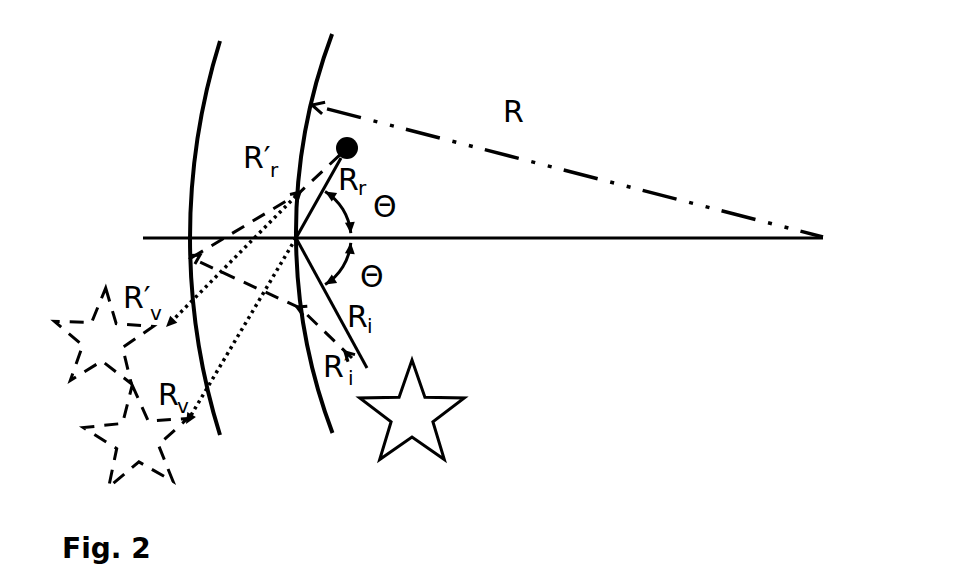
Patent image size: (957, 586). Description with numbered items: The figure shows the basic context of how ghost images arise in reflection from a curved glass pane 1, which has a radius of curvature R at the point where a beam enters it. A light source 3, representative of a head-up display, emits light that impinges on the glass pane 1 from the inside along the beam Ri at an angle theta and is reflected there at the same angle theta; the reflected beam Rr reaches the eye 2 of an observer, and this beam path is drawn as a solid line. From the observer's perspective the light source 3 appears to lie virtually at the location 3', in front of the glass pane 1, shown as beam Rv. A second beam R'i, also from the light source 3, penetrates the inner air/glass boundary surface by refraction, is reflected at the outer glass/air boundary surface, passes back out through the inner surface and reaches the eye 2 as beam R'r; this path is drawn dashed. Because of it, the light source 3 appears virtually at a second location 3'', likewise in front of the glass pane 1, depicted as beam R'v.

The curved glass pane 1 is at (178, 137).
The eye 2 is at (357, 146).
The light source 3 is at (412, 410).
The virtual location of the light source 3' is at (132, 436).
The second virtual location of the light source 3'' is at (96, 336).